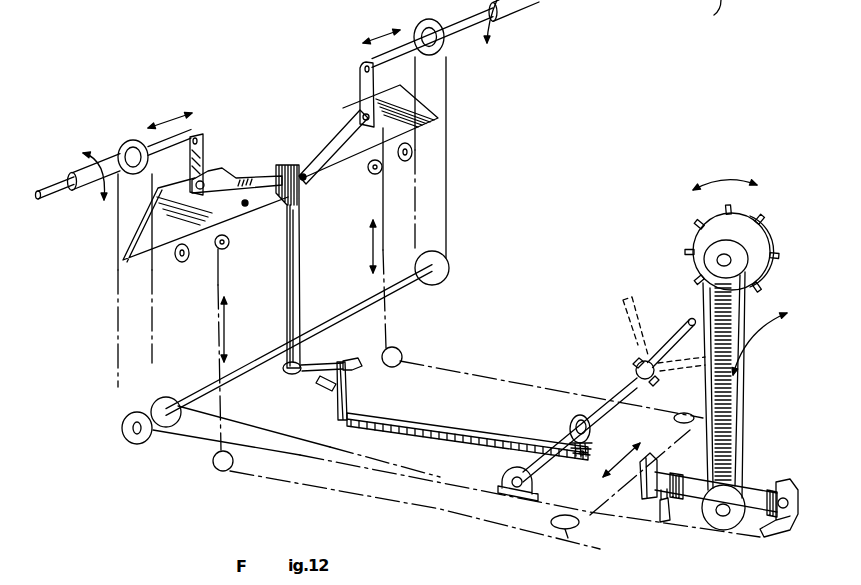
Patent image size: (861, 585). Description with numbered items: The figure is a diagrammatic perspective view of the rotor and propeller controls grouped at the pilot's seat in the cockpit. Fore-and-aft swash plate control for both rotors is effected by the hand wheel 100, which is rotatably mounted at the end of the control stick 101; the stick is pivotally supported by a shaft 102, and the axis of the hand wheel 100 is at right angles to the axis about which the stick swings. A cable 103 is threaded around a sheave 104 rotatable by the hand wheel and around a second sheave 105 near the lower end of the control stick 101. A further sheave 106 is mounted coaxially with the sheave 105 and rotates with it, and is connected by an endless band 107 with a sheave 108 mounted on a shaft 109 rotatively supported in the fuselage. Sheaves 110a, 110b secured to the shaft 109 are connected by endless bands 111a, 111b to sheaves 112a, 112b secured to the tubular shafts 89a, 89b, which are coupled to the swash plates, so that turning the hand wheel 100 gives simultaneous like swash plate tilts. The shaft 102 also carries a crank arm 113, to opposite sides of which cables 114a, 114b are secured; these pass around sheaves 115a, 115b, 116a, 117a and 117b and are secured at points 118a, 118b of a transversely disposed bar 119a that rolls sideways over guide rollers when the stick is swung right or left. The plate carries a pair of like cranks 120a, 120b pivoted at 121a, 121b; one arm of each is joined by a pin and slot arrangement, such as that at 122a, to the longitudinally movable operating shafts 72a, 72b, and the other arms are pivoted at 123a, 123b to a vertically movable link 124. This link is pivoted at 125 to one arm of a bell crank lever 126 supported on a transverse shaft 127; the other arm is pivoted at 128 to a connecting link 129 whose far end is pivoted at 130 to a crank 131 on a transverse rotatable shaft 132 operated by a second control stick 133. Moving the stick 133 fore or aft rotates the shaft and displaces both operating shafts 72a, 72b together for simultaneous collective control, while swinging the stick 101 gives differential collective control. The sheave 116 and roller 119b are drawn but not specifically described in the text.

The longitudinally movable rod 72a is at (42, 193).
The longitudinally movable operating shaft 72b is at (532, 0).
The rotatable sleeve 89a is at (82, 198).
The tubular shaft 89b is at (510, 15).
The hand wheel 100 is at (694, 241).
The control stick 101 is at (738, 320).
The shaft 102 is at (753, 493).
The cable 103 is at (725, 403).
The sheave 104 is at (712, 254).
The second sheave 105 is at (722, 517).
The second pulley or sheave 106 is at (755, 527).
The endless rope, cable, or band 107 is at (243, 410).
The sheave 108 is at (163, 398).
The shaft 109 is at (267, 330).
The sheave 110a is at (130, 443).
The sheave 110b is at (440, 283).
The endless band or cable 111a is at (118, 294).
The endless band or cable 111b is at (447, 150).
The sheave 112a is at (132, 140).
The sheave 112b is at (431, 22).
The crank arm 113 is at (657, 468).
The cable 114a is at (608, 505).
The cable 114b is at (667, 444).
The sheave 115a is at (563, 529).
The sheave 115b is at (685, 413).
The ball 116 is at (401, 353).
The sheave 116a is at (216, 466).
The sheave 117a is at (221, 264).
The sheave 117b is at (383, 206).
The securing point 118a is at (230, 242).
The securing point 118b is at (368, 166).
The transversely disposed bar 119a is at (181, 262).
The roller 119b is at (404, 162).
The crank 120a is at (238, 176).
The crank 120b is at (335, 140).
The pivot 121a is at (205, 176).
The pivot 121b is at (361, 110).
The pin and slot arrangement 122a is at (194, 134).
The pivot 123a is at (247, 206).
The pivot 123b is at (304, 180).
The link 124 is at (300, 281).
The pivot 125 is at (299, 364).
The bell crank lever 126 is at (317, 384).
The transverse supported shaft 127 is at (354, 372).
The pivot 128 is at (340, 422).
The connecting link 129 is at (426, 427).
The pivot 130 is at (582, 456).
The crank 131 is at (590, 430).
The transverse rotatable shaft 132 is at (586, 415).
The second control stick 133 is at (672, 343).